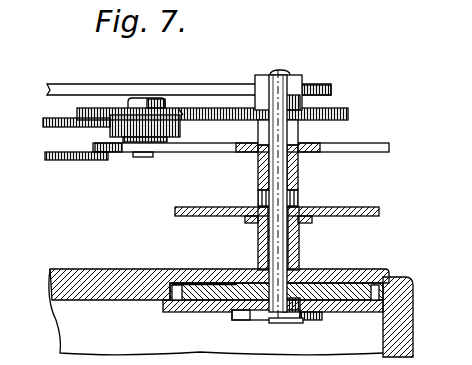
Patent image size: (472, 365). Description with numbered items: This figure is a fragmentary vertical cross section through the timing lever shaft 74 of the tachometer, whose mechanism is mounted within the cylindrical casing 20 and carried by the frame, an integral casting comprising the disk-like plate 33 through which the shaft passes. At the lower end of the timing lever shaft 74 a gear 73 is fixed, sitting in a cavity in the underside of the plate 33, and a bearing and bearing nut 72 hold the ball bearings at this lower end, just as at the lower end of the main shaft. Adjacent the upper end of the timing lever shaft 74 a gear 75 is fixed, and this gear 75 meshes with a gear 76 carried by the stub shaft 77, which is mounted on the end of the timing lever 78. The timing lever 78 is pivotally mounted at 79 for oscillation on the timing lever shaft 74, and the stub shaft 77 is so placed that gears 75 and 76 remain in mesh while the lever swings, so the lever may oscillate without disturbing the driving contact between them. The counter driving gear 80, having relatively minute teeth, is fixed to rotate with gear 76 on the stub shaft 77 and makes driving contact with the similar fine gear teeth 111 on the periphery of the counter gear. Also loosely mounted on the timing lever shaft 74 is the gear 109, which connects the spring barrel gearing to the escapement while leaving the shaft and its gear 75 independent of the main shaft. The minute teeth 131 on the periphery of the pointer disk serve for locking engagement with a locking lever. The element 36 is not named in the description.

The disk-like plate 33 is at (107, 272).
The gear 73 is at (350, 290).
The casing 20 is at (400, 308).
The rack bar 36 is at (213, 88).
The fine gear teeth 111 is at (56, 118).
The minute teeth 131 is at (57, 161).
The counter driving gear 80 is at (183, 152).
The timing lever 78 is at (167, 150).
The stub shaft 77 is at (140, 98).
The gear 76 is at (178, 108).
The gear 75 is at (349, 113).
The gear 109 is at (381, 213).
The pivotal mounting 79 is at (300, 175).
The timing lever shaft 74 is at (300, 207).
The bearing nut 72 is at (290, 320).